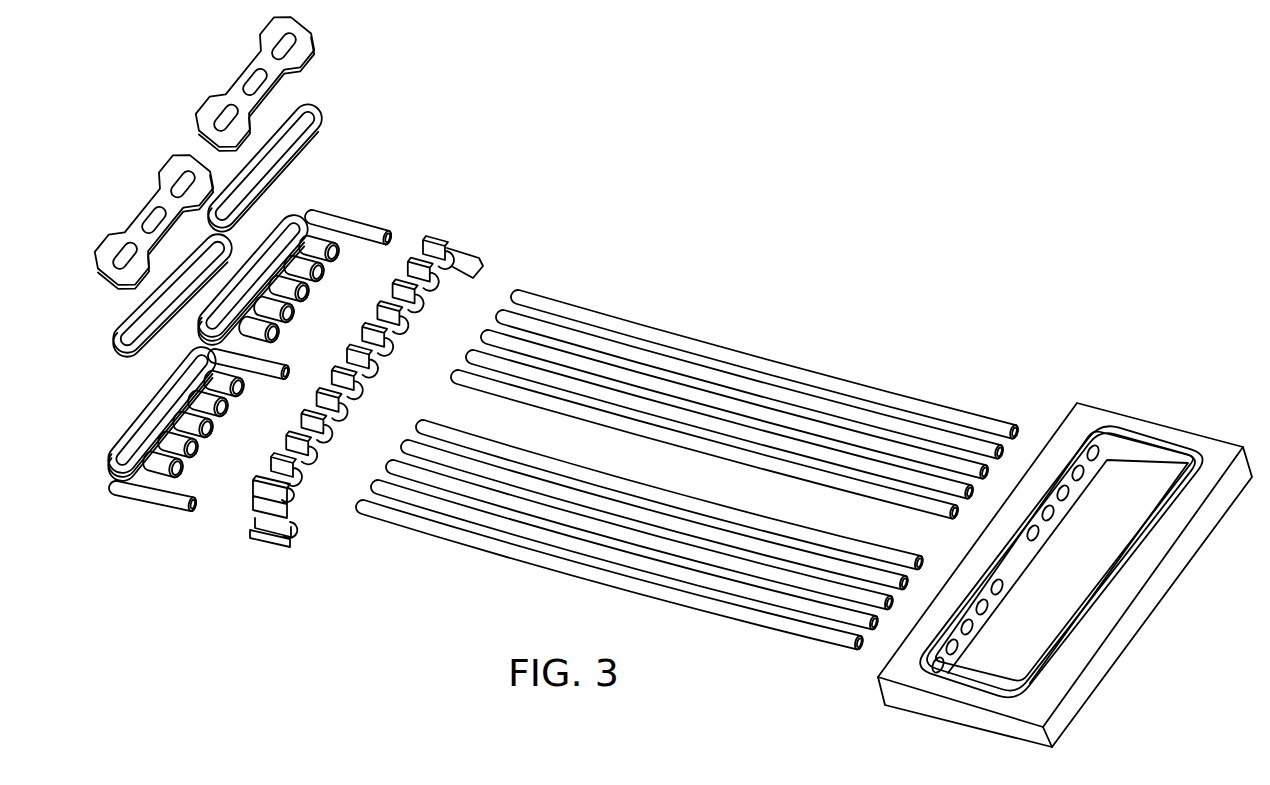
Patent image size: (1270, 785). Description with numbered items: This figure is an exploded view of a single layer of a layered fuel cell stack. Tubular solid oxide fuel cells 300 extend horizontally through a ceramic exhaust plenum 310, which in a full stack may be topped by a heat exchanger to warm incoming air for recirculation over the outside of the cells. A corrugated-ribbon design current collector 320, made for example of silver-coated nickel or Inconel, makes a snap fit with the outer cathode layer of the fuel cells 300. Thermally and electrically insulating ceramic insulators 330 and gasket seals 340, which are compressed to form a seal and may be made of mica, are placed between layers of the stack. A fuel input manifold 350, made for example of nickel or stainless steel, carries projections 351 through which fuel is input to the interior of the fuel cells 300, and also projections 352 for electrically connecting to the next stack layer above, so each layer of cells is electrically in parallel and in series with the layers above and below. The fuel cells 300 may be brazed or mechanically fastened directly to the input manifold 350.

The tubular solid oxide fuel cells 300 is at (751, 309).
The ceramic exhaust plenum 310 is at (1121, 410).
The corrugated-ribbon design current collector 320 is at (445, 246).
The ceramic insulators 330 is at (140, 212).
The gasket seals 340 is at (118, 348).
The fuel input manifold 350 is at (344, 190).
The projections 351 is at (172, 432).
The projections 352 is at (173, 510).